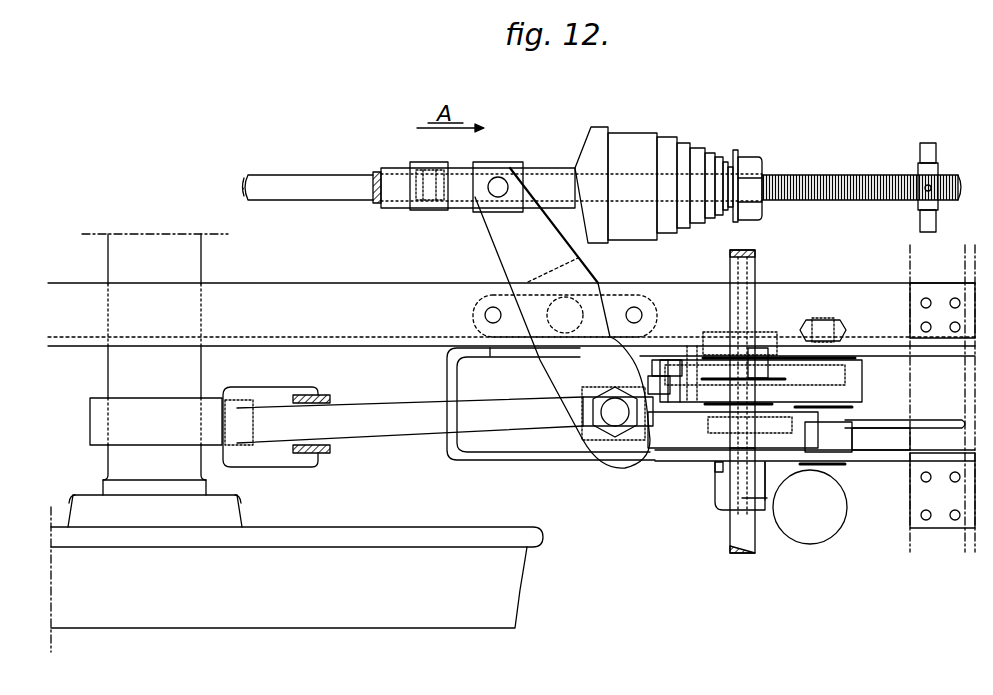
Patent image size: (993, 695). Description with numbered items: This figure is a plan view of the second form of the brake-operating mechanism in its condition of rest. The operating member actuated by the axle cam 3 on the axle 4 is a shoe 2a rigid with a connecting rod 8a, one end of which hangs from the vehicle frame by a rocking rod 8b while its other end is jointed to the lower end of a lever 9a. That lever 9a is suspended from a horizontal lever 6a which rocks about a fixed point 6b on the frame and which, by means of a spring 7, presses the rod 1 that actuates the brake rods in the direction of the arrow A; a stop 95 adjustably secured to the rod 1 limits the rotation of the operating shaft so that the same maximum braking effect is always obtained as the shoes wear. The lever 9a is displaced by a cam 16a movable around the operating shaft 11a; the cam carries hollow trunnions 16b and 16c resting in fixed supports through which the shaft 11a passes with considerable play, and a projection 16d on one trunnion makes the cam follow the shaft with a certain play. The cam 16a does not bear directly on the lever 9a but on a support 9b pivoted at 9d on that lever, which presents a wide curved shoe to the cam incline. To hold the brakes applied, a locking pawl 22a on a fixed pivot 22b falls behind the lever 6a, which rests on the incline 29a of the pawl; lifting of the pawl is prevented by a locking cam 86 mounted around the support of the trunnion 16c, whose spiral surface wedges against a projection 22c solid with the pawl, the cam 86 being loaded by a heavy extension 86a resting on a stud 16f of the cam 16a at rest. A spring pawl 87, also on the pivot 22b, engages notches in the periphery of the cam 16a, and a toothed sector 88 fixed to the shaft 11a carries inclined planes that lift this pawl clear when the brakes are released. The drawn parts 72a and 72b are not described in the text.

The rod 1 is at (315, 187).
The spring 7 is at (683, 152).
The stop 95 is at (938, 205).
The axle 4 is at (155, 380).
The axle cam 3 is at (156, 421).
The shoe 2a is at (272, 455).
The connecting rod 8a is at (410, 420).
The rocking rod 8b is at (323, 395).
The horizontal lever 6a is at (562, 332).
The fixed point 6b is at (583, 306).
The lever 9a is at (580, 452).
The pivot 9d is at (600, 440).
The support 9b is at (655, 455).
The stud 16f is at (660, 364).
The cam 16a is at (708, 427).
The hollow trunnion 16b is at (820, 375).
The hollow trunnion 16c is at (767, 447).
The projection 16d is at (717, 470).
The locking pawl 22a is at (697, 387).
The fixed pivot 22b is at (843, 393).
The projection 22c is at (780, 360).
The incline 29a is at (670, 387).
The locking cam 86 is at (758, 363).
The heavy extension 86a is at (687, 367).
The spring pawl 87 is at (885, 436).
The toothed sector 88 is at (730, 450).
The roller 72a is at (767, 507).
The bracket 72b is at (722, 472).
The operating shaft 11a is at (733, 523).